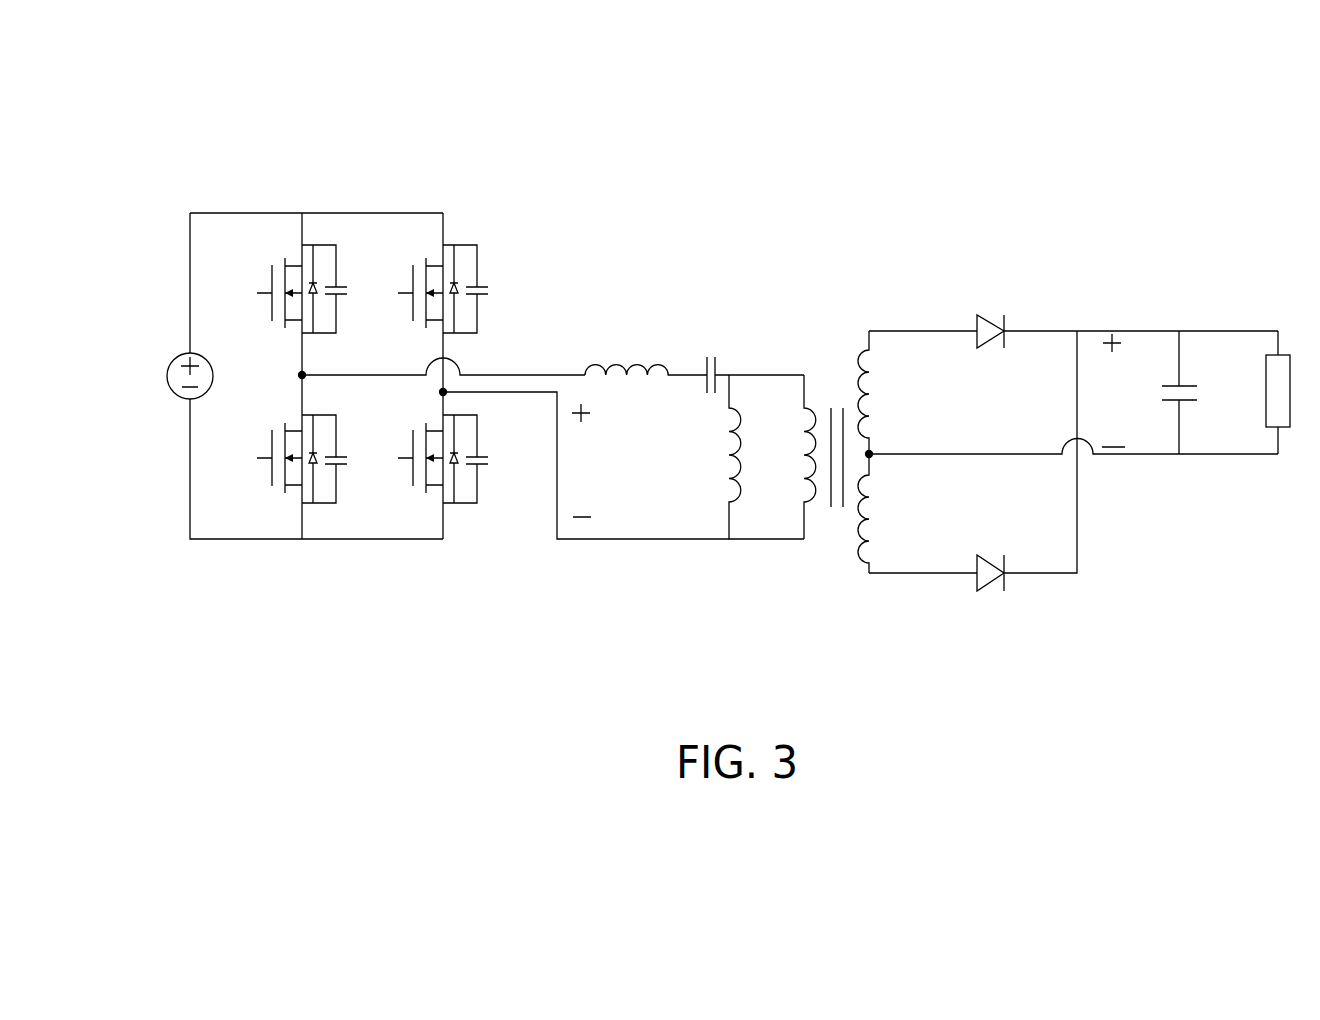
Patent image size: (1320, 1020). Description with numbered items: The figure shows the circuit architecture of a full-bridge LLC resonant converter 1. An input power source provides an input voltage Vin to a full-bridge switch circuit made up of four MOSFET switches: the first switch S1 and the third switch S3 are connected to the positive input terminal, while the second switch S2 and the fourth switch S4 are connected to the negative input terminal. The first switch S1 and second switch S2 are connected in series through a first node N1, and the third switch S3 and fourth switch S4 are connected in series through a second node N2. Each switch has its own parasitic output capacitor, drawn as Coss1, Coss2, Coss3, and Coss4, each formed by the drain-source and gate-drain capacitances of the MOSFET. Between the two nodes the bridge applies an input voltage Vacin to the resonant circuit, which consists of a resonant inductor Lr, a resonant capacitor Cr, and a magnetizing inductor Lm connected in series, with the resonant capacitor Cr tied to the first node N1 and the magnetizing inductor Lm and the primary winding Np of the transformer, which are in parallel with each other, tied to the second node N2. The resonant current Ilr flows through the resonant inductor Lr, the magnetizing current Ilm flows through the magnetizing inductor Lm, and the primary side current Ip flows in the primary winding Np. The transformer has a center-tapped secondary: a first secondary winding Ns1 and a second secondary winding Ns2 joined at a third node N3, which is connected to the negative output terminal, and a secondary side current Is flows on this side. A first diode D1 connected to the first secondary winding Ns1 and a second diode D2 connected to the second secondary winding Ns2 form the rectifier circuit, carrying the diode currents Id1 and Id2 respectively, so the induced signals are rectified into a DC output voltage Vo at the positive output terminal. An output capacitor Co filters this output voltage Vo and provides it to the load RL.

The LLC resonant converter 1 is at (143, 120).
The input voltage Vin is at (162, 376).
The first switch S1 is at (270, 294).
The second switch S2 is at (266, 457).
The third switch S3 is at (409, 302).
The fourth switch S4 is at (409, 465).
The parasitic capacitor Coss1 is at (346, 283).
The parasitic capacitor Coss2 is at (345, 465).
The parasitic capacitor Coss3 is at (487, 283).
The parasitic capacitor Coss4 is at (485, 465).
The first node N1 is at (422, 374).
The second node N2 is at (564, 458).
The third node N3 is at (1072, 440).
The input voltage of the resonant circuit Vacin is at (599, 460).
The resonant inductor Lr is at (646, 352).
The resonant capacitor Cr is at (750, 360).
The magnetizing inductor Lm is at (766, 457).
The resonant current Ilr is at (693, 390).
The magnetizing current Ilm is at (723, 393).
The primary side current Ip is at (793, 393).
The primary winding Np is at (815, 439).
The first secondary winding Ns1 is at (892, 392).
The second secondary winding Ns2 is at (892, 513).
The first diode D1 is at (1073, 348).
The second diode D2 is at (973, 461).
The current passing through the first diode Id1 is at (1066, 297).
The current passing through the second diode Id2 is at (1066, 605).
The secondary side current Is is at (883, 468).
The output voltage Vo is at (1115, 390).
The output capacitor Co is at (1191, 392).
The load RL is at (1256, 392).